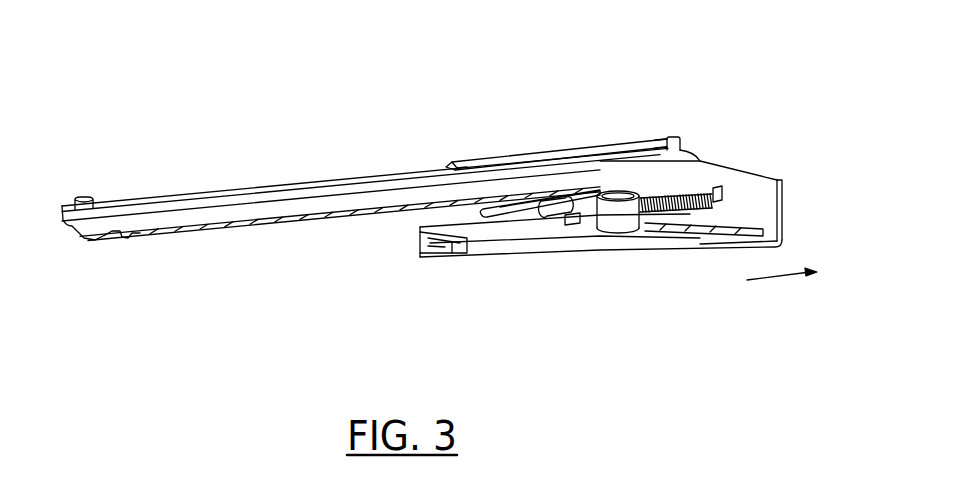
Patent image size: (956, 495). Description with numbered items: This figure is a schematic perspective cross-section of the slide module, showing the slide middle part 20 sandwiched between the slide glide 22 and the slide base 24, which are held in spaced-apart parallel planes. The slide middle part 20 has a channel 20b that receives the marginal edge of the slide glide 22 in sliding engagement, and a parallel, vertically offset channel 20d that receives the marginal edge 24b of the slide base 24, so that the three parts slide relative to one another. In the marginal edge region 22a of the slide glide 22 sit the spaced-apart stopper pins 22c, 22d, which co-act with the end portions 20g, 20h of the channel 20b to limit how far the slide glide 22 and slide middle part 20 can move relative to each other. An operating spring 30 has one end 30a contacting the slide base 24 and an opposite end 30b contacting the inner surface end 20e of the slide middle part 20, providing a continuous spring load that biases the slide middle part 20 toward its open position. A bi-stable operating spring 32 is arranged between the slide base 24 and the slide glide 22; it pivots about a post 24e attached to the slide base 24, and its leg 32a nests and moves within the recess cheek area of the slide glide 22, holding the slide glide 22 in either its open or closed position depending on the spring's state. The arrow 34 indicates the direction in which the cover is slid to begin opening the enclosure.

The slide middle part 20 is at (783, 193).
The channel 20b is at (473, 158).
The channel 20d is at (420, 230).
The inner surface end 20e is at (760, 213).
The end portion 20g is at (655, 137).
The end portion 20h is at (447, 167).
The slide glide 22 is at (145, 229).
The marginal edge 22a is at (229, 190).
The stopper pin 22c is at (675, 135).
The stopper pin 22d is at (84, 197).
The slide base 24 is at (708, 236).
The marginal edge 24b is at (435, 252).
The post 24e is at (573, 222).
The operating spring 30 is at (678, 212).
The end of operating spring 30a is at (643, 217).
The opposite end of operating spring 30b is at (713, 190).
The bi-stable operating spring 32 is at (488, 224).
The leg of bi-stable operating spring 32a is at (512, 207).
The arrow 34 is at (775, 275).